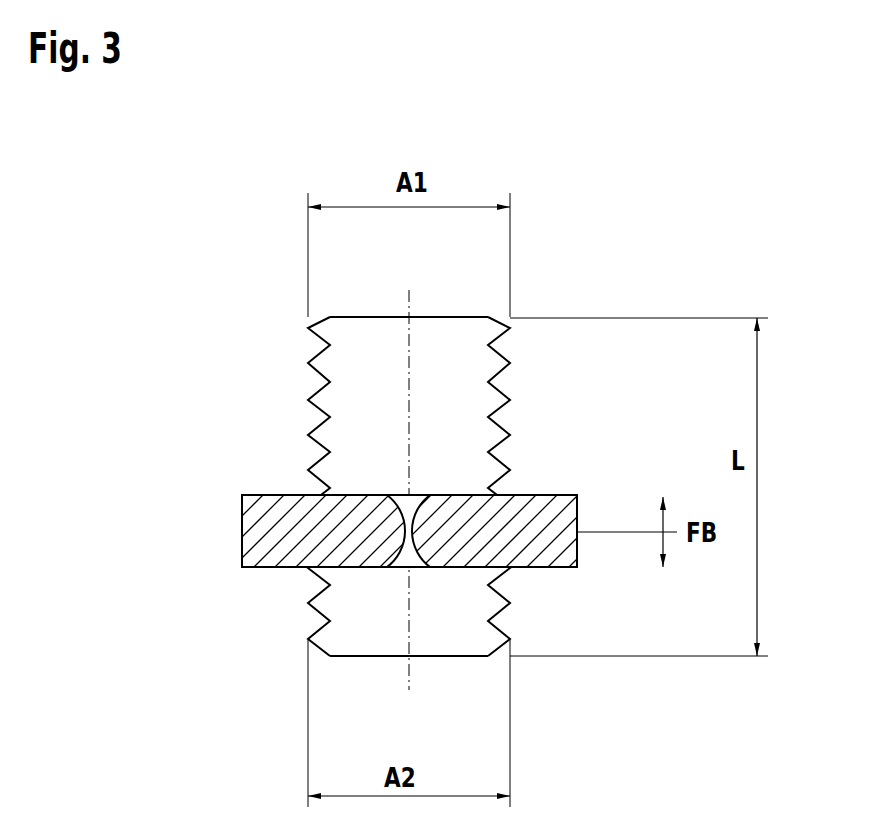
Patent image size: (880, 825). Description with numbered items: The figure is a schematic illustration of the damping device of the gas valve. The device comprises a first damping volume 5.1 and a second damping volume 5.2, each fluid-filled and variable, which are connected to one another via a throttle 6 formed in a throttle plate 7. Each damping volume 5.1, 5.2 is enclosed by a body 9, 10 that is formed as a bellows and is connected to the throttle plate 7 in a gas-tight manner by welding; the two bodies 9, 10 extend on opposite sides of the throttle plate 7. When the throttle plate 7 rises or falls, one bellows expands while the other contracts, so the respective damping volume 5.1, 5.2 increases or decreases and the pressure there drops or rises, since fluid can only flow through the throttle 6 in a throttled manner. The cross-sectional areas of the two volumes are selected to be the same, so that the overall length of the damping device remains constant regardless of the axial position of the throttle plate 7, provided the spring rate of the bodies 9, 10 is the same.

The first damping volume 5.1 is at (360, 433).
The second damping volume 5.2 is at (473, 609).
The throttle 6 is at (408, 528).
The throttle plate 7 is at (263, 532).
The body 9 is at (313, 354).
The body 10 is at (317, 613).